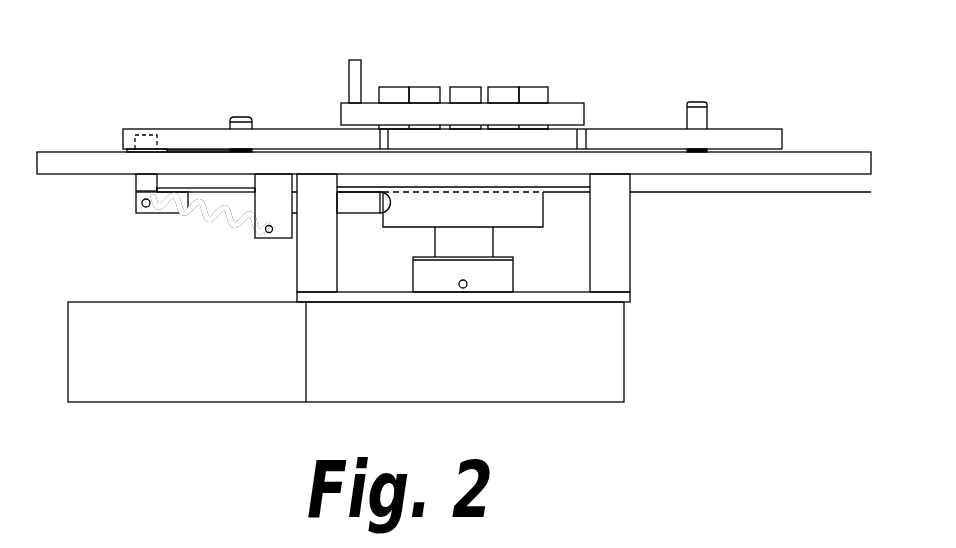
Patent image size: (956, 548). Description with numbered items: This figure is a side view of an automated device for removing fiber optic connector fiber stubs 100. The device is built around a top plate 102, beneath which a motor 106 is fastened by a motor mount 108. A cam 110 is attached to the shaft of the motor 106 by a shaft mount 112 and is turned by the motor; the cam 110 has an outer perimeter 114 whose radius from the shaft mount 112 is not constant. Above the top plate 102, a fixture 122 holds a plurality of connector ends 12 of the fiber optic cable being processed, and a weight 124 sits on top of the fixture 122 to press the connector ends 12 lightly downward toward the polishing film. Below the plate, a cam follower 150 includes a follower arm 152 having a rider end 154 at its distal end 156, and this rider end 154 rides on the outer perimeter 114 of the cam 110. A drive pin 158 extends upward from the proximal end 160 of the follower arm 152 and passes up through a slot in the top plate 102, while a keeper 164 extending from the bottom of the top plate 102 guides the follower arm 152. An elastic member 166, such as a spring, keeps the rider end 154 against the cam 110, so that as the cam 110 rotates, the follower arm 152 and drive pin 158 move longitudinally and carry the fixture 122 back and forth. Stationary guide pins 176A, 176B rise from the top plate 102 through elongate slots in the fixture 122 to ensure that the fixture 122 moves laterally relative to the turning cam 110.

The automated device for removing fiber optic connector fiber stubs 100 is at (674, 389).
The top plate 102 is at (836, 163).
The motor 106 is at (143, 385).
The motor mount 108 is at (618, 242).
The cam 110 is at (522, 218).
The shaft mount 112 is at (502, 272).
The outer perimeter 114 is at (384, 196).
The fixture 122 is at (769, 138).
The weight 124 is at (572, 112).
The connector ends 12 is at (393, 96).
The cam follower 150 is at (218, 240).
The follower arm 152 is at (150, 213).
The rider end 154 is at (382, 208).
The distal end 156 is at (353, 207).
The drive pin 158 is at (137, 182).
The proximal end 160 is at (137, 192).
The keeper 164 is at (273, 215).
The elastic member 166 is at (187, 213).
The stationary guide pin 176A is at (699, 117).
The stationary guide pin 176B is at (238, 117).